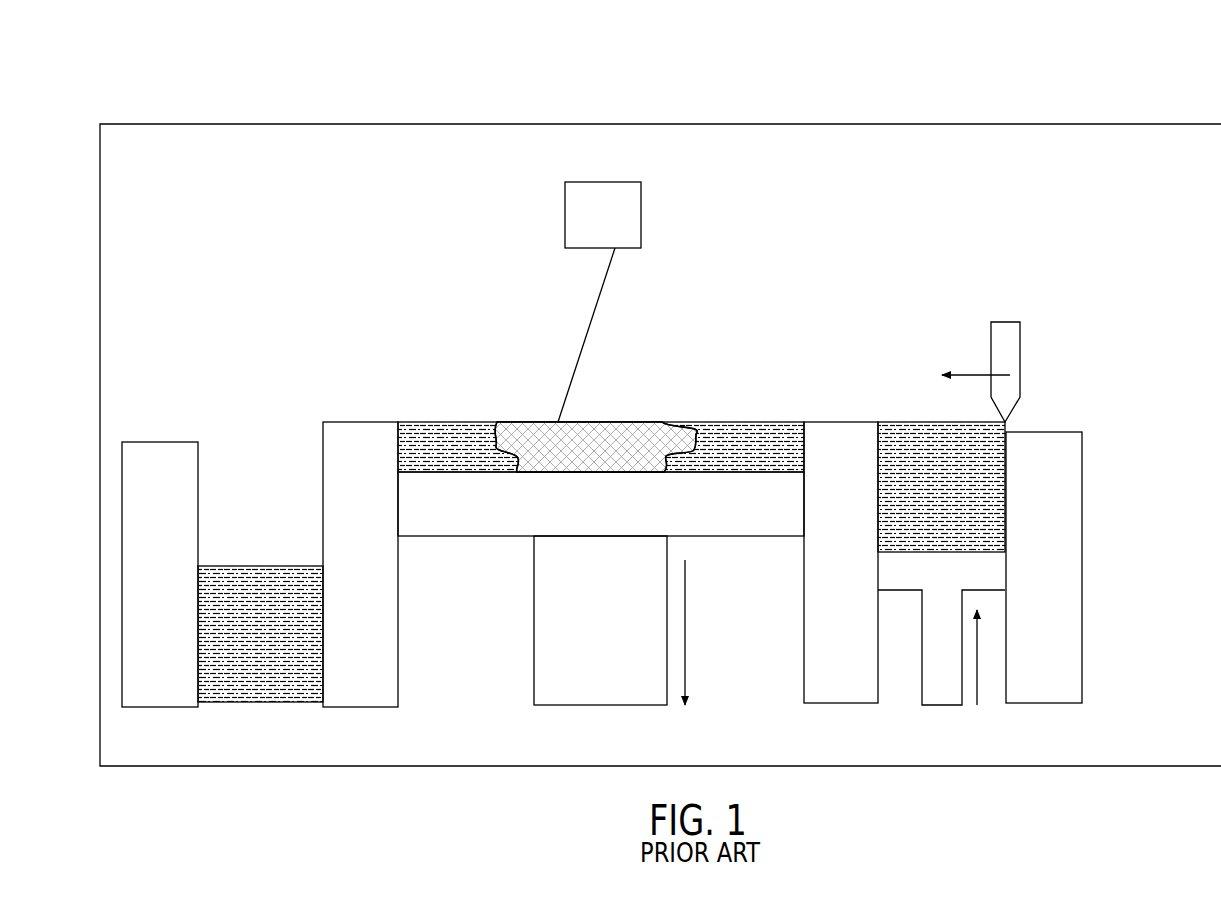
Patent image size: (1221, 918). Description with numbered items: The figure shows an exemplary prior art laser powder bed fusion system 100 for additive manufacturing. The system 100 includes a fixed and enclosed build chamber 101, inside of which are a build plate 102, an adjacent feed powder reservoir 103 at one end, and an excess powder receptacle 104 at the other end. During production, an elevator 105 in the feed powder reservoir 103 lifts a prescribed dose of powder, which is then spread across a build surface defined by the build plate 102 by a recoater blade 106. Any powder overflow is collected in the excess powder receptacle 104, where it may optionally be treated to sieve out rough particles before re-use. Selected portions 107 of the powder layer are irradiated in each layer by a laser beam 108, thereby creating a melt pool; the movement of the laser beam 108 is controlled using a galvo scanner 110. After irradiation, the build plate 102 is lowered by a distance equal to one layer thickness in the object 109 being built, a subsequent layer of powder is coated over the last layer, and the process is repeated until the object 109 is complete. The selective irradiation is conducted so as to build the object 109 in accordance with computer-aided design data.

The laser powder bed fusion system 100 is at (440, 104).
The build chamber 101 is at (1052, 124).
The build plate 102 is at (746, 526).
The feed powder reservoir 103 is at (908, 435).
The excess powder receptacle 104 is at (157, 460).
The elevator 105 is at (997, 570).
The recoater blade 106 is at (1008, 355).
The selected portions 107 is at (608, 420).
The laser beam 108 is at (598, 299).
The object 109 is at (662, 433).
The galvo scanner 110 is at (612, 180).